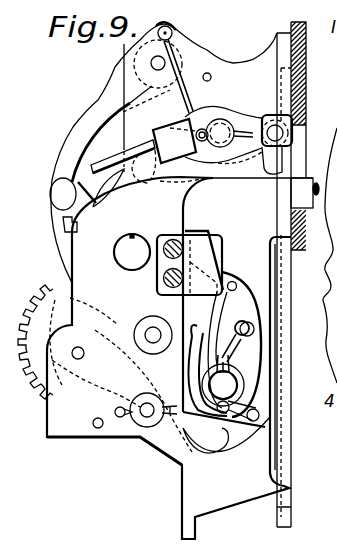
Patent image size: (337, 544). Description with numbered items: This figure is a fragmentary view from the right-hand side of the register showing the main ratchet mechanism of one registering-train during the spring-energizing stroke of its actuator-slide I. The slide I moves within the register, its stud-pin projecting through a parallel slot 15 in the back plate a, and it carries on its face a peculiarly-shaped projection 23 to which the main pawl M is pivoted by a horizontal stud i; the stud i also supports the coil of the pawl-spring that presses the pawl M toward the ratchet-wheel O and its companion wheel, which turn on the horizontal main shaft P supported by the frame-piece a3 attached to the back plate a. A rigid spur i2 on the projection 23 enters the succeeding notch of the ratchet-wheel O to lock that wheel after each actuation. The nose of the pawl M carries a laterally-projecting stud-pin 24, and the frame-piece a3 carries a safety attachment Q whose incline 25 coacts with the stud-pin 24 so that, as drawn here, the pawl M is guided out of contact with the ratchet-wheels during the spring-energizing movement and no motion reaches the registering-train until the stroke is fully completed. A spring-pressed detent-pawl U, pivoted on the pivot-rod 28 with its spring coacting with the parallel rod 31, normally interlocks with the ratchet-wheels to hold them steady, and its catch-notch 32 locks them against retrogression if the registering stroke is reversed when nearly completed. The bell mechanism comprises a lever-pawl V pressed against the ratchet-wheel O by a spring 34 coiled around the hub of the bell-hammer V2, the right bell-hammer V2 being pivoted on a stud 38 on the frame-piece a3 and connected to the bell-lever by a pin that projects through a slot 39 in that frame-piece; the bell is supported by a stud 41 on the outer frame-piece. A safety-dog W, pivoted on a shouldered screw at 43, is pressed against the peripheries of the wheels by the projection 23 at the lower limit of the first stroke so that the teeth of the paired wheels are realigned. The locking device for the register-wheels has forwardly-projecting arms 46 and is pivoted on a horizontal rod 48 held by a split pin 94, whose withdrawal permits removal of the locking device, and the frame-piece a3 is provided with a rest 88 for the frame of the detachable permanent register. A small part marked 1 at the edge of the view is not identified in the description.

The actuator-slide I is at (280, 207).
The detent-pawl U is at (103, 107).
The lever-pawl V is at (116, 168).
The bell-hammer V2 is at (203, 141).
The pivot-rod 28 is at (172, 52).
The parallel rod 31 is at (207, 81).
The spring 34 is at (176, 95).
The stud 38 is at (228, 126).
The slot 39 is at (270, 160).
The forwardly-projecting arm 46 is at (288, 108).
The parallel slot 15 is at (304, 145).
The pin 1 is at (313, 196).
The back plate a is at (303, 73).
The right-hand frame-piece a3 is at (235, 274).
The catch-notch 32 is at (66, 217).
The shouldered screw 43 is at (80, 356).
The main shaft P is at (132, 252).
The safety attachment Q is at (190, 263).
The ratchet-wheel O is at (208, 226).
The incline 25 is at (236, 282).
The stud-pin 24 is at (261, 348).
The main pawl M is at (240, 318).
The rigid spur i2 is at (208, 361).
The stud i is at (223, 388).
The projection 23 is at (264, 389).
The safety-dog W is at (216, 445).
The stud 41 is at (152, 318).
The split pin 94 is at (115, 410).
The pivot-rod 48 is at (145, 413).
The rest 88 is at (168, 501).